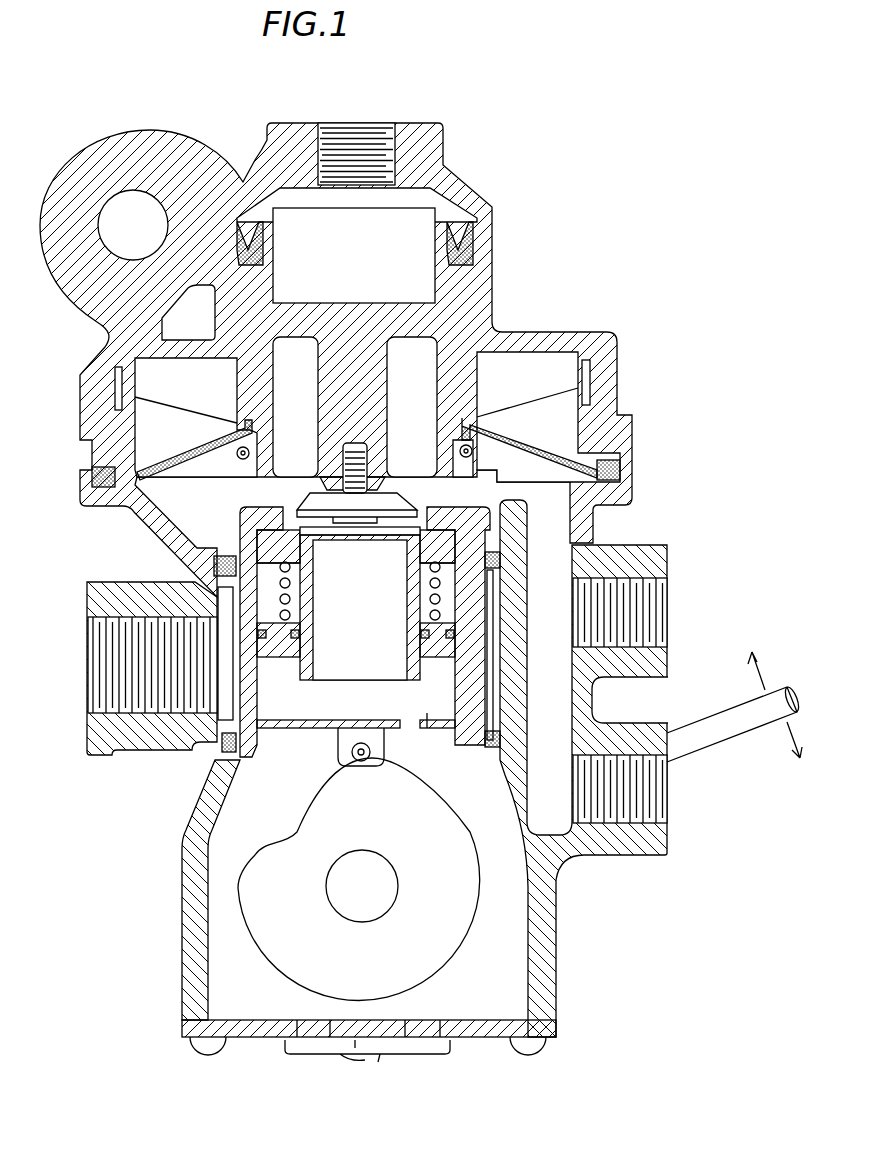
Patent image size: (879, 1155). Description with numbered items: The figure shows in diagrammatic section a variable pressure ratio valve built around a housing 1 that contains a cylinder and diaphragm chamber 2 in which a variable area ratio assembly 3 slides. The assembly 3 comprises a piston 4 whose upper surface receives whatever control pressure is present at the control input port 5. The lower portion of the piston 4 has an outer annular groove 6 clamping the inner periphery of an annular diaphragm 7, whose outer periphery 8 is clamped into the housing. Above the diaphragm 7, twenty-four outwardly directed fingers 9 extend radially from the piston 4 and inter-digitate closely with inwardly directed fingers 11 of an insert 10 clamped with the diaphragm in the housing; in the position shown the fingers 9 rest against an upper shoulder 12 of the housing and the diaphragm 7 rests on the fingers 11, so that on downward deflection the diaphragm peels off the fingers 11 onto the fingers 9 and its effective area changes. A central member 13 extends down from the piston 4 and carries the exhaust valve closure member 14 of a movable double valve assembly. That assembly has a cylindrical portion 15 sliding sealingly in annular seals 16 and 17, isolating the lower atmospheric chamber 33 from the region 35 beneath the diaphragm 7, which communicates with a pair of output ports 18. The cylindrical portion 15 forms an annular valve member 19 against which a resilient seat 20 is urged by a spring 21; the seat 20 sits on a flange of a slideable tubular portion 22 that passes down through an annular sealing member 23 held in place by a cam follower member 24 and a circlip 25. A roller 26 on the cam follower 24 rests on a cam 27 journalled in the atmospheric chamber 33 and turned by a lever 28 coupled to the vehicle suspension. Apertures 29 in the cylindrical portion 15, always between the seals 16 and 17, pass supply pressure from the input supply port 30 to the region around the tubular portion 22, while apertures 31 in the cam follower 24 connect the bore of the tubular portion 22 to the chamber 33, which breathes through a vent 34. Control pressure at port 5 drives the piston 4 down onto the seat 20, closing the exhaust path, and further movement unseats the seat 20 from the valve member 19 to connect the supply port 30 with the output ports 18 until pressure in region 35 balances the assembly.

The housing 1 is at (551, 346).
The cylinder and diaphragm chamber 2 is at (472, 332).
The variable area ratio assembly 3 is at (419, 399).
The piston 4 is at (455, 292).
The control input port 5 is at (362, 148).
The outer annular groove 6 is at (237, 459).
The annular diaphragm 7 is at (165, 475).
The outer periphery of the diaphragm 8 is at (100, 482).
The outwardly directed fingers 9 is at (557, 368).
The insert 10 is at (118, 450).
The inwardly directed fingers 11 is at (150, 423).
The upper shoulder 12 is at (168, 362).
The central member 13 is at (358, 420).
The exhaust valve closure member 14 is at (397, 506).
The cylindrical portion 15 is at (480, 638).
The annular seal 16 is at (500, 560).
The annular seal 17 is at (503, 748).
The output ports 18 is at (640, 612).
The annular valve member 19 is at (270, 517).
The resilient seat 20 is at (460, 530).
The spring 21 is at (300, 590).
The slideable tubular portion 22 is at (313, 612).
The annular sealing member 23 is at (272, 660).
The cam follower member 24 is at (320, 733).
The circlip 25 is at (228, 742).
The roller 26 is at (362, 767).
The cam 27 is at (270, 884).
The lever 28 is at (707, 722).
The apertures 29 is at (235, 576).
The input supply port 30 is at (150, 700).
The apertures 31 is at (427, 716).
The atmospheric chamber 33 is at (268, 834).
The vent 34 is at (420, 1028).
The region beneath the diaphragm 35 is at (598, 447).